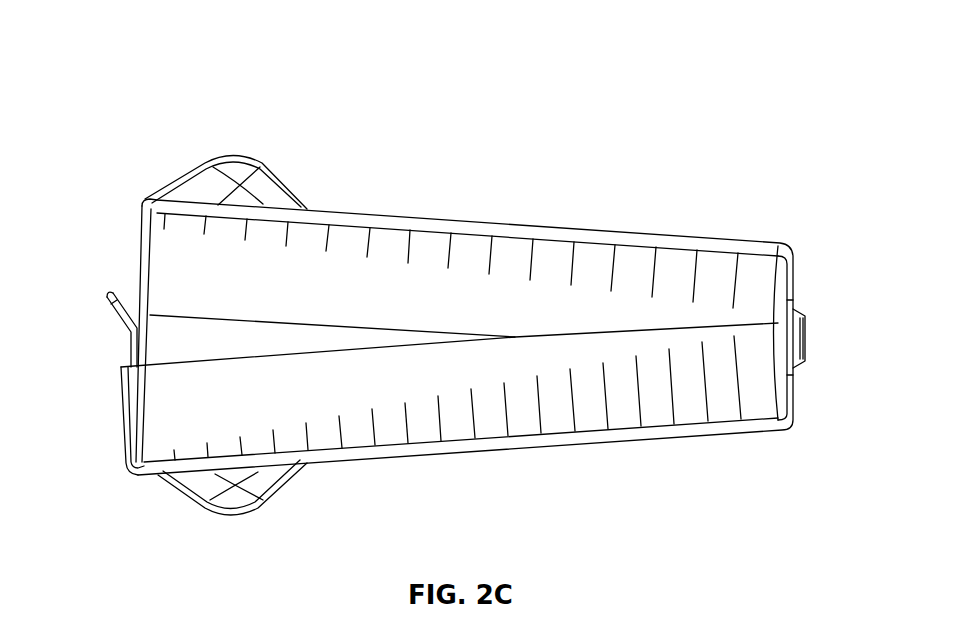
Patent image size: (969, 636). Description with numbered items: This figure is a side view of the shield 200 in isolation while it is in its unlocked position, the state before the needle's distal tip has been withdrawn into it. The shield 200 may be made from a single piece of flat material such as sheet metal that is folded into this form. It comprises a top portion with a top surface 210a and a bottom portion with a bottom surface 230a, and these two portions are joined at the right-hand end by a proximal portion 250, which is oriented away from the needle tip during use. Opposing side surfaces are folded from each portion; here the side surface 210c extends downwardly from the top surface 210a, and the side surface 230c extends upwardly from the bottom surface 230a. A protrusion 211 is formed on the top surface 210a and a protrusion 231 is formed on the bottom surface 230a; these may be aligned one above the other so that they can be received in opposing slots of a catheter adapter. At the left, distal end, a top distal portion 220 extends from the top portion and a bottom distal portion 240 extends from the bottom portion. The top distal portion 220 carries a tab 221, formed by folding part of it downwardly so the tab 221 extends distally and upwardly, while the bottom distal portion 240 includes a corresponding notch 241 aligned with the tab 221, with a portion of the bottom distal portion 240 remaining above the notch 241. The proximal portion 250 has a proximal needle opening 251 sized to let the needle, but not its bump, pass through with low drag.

The shield 200 is at (142, 55).
The protrusion 211 is at (217, 160).
The top surface 210a is at (541, 222).
The side surface 210c is at (668, 270).
The top distal portion 220 is at (138, 247).
The tab 221 is at (107, 297).
The bottom distal portion 240 is at (119, 374).
The notch 241 is at (125, 413).
The protrusion 231 is at (241, 506).
The bottom surface 230a is at (552, 449).
The side surface 230c is at (686, 388).
The proximal portion 250 is at (806, 306).
The proximal needle opening 251 is at (811, 338).